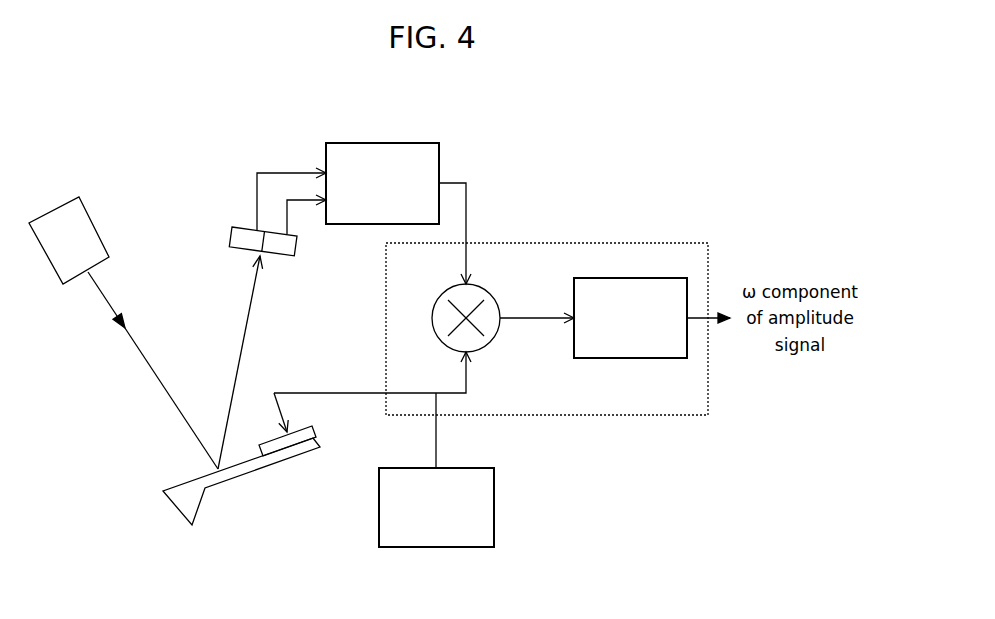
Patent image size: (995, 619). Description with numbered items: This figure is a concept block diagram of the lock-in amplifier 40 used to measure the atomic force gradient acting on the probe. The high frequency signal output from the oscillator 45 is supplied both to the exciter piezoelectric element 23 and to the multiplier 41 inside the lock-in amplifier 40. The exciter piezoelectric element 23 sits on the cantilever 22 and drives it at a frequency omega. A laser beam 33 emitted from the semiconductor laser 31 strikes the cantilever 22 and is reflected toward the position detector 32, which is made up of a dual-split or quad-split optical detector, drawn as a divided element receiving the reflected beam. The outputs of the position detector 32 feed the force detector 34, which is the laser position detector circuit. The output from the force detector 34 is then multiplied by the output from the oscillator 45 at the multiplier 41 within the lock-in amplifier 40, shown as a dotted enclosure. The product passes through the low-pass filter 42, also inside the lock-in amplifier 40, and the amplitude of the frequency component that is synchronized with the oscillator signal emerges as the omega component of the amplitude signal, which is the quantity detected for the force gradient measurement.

The cantilever 22 is at (250, 473).
The exciter piezoelectric element 23 is at (313, 428).
The semiconductor laser 31 is at (88, 210).
The position detector 32 is at (247, 227).
The laser beam 33 is at (243, 333).
The force detector 34 is at (387, 145).
The lock-in amplifier 40 is at (637, 245).
The multiplier 41 is at (488, 287).
The low-pass filter 42 is at (617, 358).
The oscillator 45 is at (492, 497).